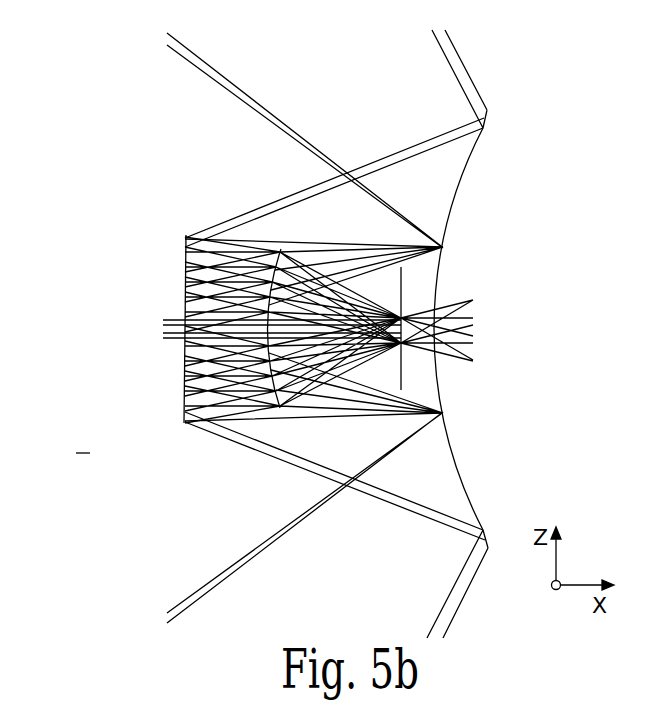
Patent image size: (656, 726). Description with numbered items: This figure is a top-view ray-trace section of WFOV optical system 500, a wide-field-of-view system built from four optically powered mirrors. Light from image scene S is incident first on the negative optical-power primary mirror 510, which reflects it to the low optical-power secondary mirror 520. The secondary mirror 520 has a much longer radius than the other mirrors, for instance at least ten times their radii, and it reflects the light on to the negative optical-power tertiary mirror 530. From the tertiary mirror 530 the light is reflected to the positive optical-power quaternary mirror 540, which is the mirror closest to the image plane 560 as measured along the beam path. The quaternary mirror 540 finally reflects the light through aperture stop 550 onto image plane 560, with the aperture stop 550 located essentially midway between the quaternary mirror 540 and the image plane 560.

The WFOV optical system 500 is at (102, 88).
The primary mirror 510 is at (460, 460).
The secondary mirror 520 is at (183, 396).
The tertiary mirror 530 is at (402, 377).
The quaternary mirror 540 is at (270, 302).
The aperture stop 550 is at (397, 317).
The image plane 560 is at (473, 317).
The image scene S is at (83, 442).